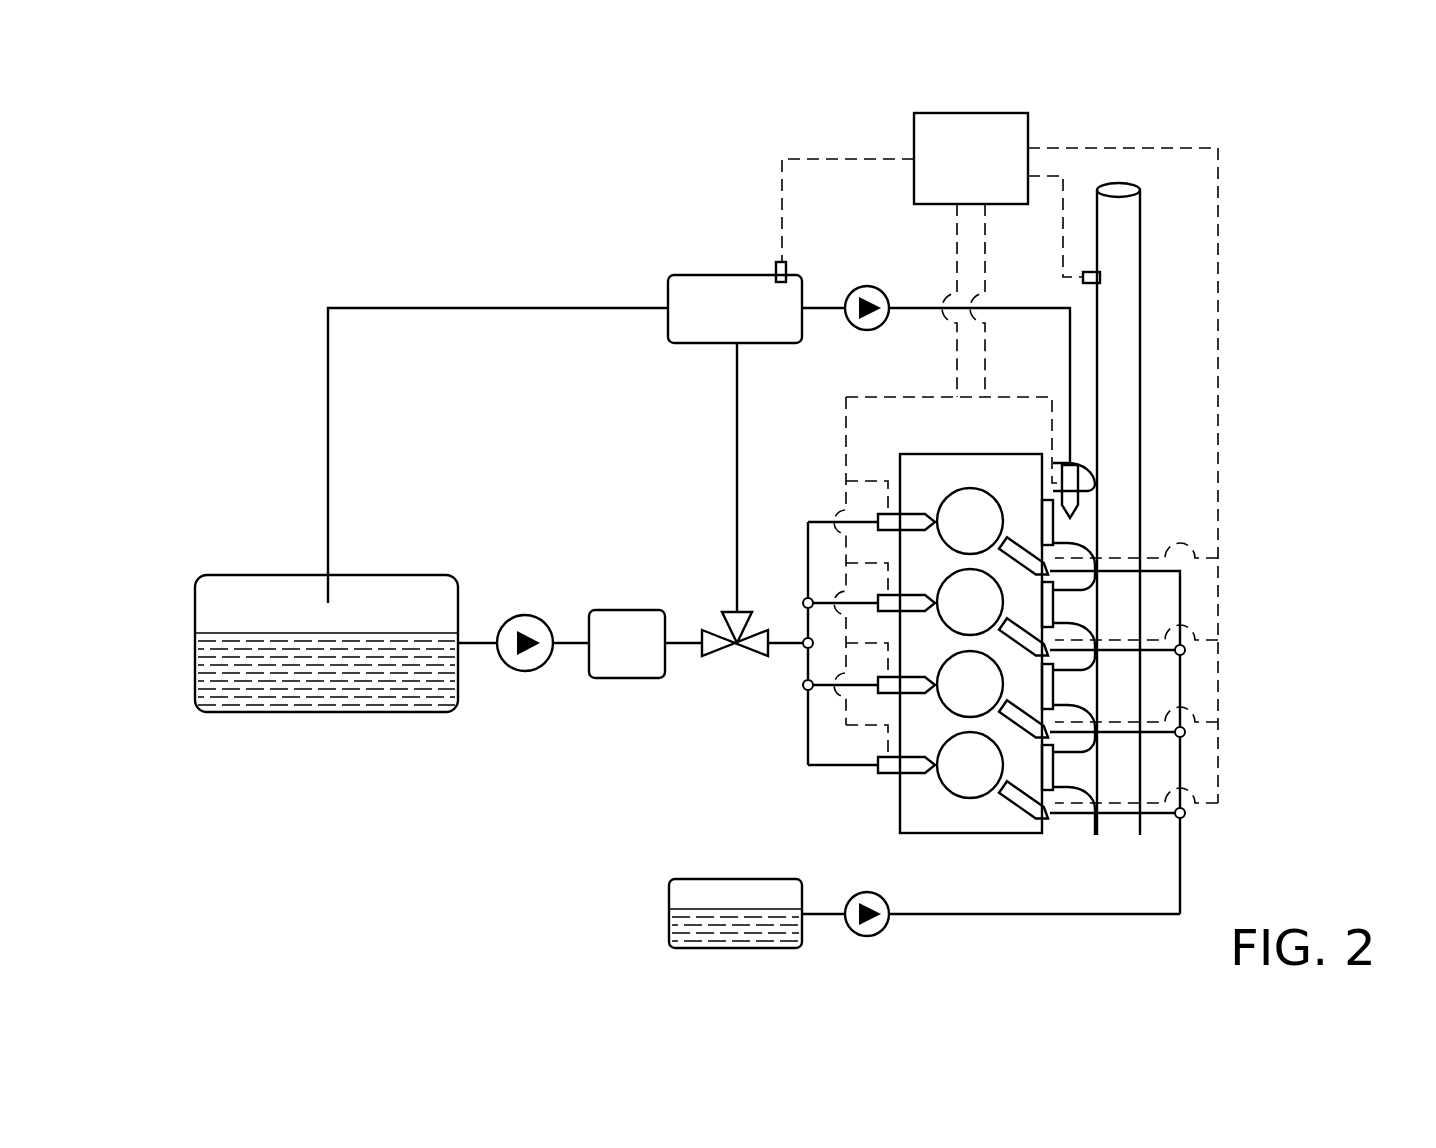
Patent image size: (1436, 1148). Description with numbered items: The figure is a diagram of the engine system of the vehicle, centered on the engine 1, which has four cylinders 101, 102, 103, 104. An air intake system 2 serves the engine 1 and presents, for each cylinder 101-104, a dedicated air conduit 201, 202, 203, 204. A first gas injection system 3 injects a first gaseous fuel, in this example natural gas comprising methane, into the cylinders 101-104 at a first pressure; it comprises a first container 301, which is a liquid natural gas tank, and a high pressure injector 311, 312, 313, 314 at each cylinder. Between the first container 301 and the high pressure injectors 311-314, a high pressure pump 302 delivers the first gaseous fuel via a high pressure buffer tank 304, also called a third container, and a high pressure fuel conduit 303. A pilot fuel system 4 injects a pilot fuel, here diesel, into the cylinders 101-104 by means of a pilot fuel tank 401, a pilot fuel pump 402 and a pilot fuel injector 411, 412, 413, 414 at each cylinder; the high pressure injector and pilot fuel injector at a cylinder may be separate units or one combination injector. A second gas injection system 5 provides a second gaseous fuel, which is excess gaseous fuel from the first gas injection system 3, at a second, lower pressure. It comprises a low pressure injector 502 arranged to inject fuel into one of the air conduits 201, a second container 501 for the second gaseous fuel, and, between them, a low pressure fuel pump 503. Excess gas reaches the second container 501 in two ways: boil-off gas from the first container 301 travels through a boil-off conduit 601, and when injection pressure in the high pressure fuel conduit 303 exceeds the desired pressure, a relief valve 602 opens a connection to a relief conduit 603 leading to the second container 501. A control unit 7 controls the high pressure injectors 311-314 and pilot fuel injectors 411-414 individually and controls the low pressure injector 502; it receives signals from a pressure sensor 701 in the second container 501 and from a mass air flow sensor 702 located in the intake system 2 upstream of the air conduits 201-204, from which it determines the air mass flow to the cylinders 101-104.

The engine 1 is at (970, 833).
The air intake system 2 is at (1142, 418).
The first gas injection system 3 is at (434, 772).
The pilot fuel system 4 is at (630, 845).
The second gas injection system 5 is at (292, 307).
The control unit 7 is at (966, 113).
The cylinder 101 is at (949, 534).
The cylinder 102 is at (949, 615).
The cylinder 103 is at (949, 697).
The cylinder 104 is at (949, 778).
The air conduit 201 is at (1053, 546).
The air conduit 202 is at (1053, 647).
The air conduit 203 is at (1053, 728).
The air conduit 204 is at (1053, 810).
The first container 301 is at (325, 712).
The high pressure pump 302 is at (520, 671).
The high pressure fuel conduit 303 is at (680, 640).
The high pressure buffer tank 304 is at (625, 678).
The high pressure injector 311 is at (878, 514).
The high pressure injector 312 is at (878, 600).
The high pressure injector 313 is at (891, 693).
The high pressure injector 314 is at (888, 774).
The pilot fuel tank 401 is at (728, 879).
The pilot fuel pump 402 is at (866, 892).
The pilot fuel injector 411 is at (1053, 612).
The pilot fuel injector 412 is at (1053, 692).
The pilot fuel injector 413 is at (1053, 772).
The pilot fuel injector 414 is at (1042, 832).
The second container 501 is at (728, 272).
The low pressure injector 502 is at (1078, 482).
The low pressure fuel pump 503 is at (858, 292).
The boil-off conduit 601 is at (328, 470).
The relief valve 602 is at (745, 650).
The relief conduit 603 is at (737, 474).
The pressure sensor 701 is at (781, 262).
The mass air flow sensor 702 is at (1100, 277).